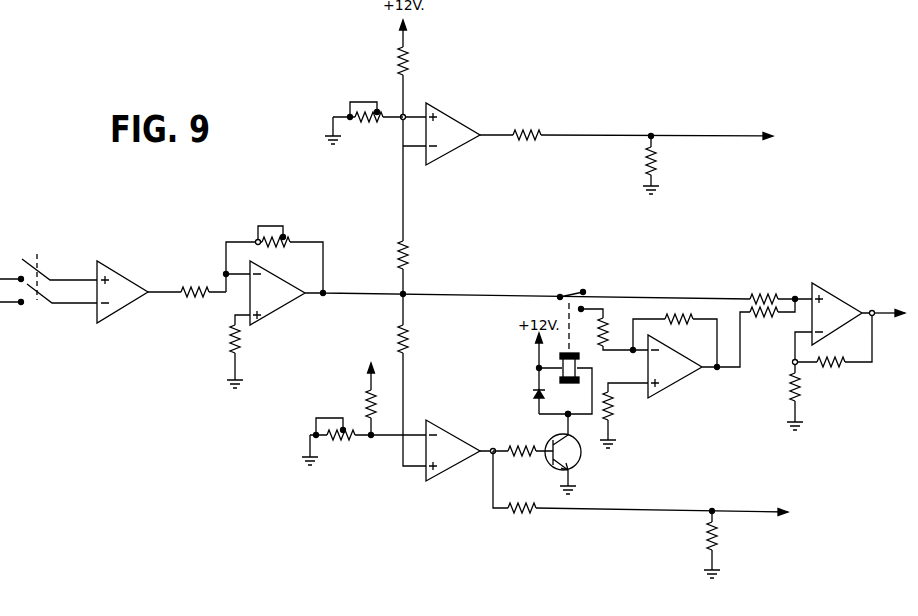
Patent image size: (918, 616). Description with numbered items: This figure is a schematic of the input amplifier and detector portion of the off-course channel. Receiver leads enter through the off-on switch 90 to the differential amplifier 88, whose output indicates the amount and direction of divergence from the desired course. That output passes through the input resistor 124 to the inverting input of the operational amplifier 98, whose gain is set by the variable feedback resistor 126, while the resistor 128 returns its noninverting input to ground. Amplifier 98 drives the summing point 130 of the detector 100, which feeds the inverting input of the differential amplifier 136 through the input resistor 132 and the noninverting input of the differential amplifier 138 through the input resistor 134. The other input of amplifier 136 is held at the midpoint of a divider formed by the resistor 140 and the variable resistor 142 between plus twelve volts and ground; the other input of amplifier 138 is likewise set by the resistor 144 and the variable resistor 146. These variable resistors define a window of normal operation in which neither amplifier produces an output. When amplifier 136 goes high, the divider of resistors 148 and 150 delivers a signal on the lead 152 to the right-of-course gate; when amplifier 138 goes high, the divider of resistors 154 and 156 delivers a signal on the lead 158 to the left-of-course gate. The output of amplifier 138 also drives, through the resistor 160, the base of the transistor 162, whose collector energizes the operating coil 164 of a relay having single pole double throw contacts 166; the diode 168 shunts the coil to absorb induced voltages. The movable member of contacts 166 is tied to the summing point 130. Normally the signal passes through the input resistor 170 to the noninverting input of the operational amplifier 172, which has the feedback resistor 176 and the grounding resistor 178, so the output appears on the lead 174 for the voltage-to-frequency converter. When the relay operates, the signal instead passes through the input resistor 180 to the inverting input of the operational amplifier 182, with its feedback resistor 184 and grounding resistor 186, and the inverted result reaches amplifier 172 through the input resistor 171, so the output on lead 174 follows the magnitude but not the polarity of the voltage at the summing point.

The differential amplifier 88 is at (131, 279).
The off-on switch 90 is at (31, 253).
The operational amplifier 98 is at (283, 305).
The detector 100 is at (624, 258).
The input resistor 124 is at (192, 305).
The variable feedback resistor 126 is at (298, 217).
The resistor 128 is at (222, 342).
The summing point 130 is at (407, 292).
The input resistor 132 is at (413, 254).
The input resistor 134 is at (413, 335).
The differential amplifier 136 is at (451, 117).
The differential amplifier 138 is at (438, 423).
The resistor 140 is at (413, 63).
The variable resistor 142 is at (387, 108).
The resistor 144 is at (367, 413).
The variable resistor 146 is at (332, 440).
The resistor 148 is at (527, 131).
The resistor 150 is at (658, 158).
The lead 152 is at (715, 136).
The resistor 154 is at (530, 513).
The resistor 156 is at (703, 540).
The lead 158 is at (737, 508).
The resistor 160 is at (523, 460).
The transistor 162 is at (583, 460).
The operating coil 164 is at (583, 363).
The single pole double throw contacts 166 is at (570, 292).
The diode 168 is at (532, 393).
The input resistor 170 is at (762, 293).
The input resistor 171 is at (768, 317).
The operational amplifier 172 is at (853, 293).
The lead 174 is at (883, 312).
The feedback resistor 176 is at (838, 372).
The resistor 178 is at (802, 387).
The input resistor 180 is at (608, 323).
The operational amplifier 182 is at (685, 380).
The feedback resistor 184 is at (673, 315).
The resistor 186 is at (618, 407).